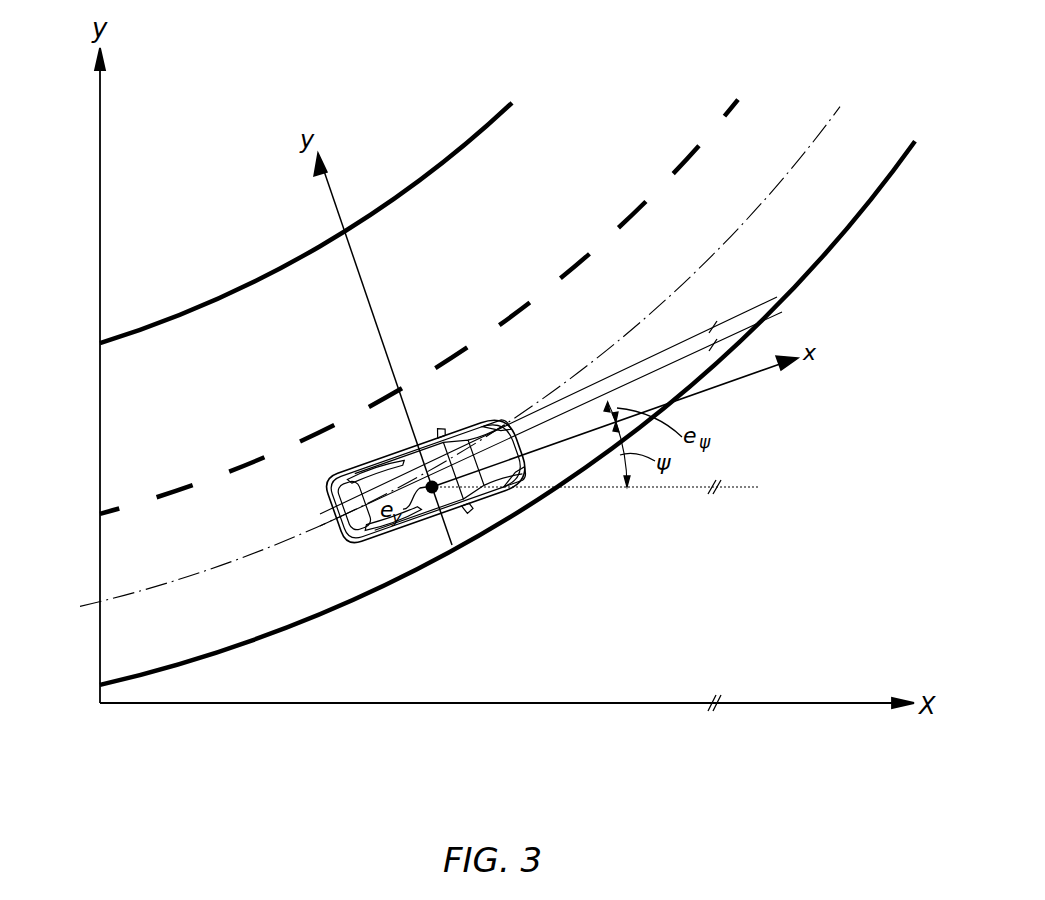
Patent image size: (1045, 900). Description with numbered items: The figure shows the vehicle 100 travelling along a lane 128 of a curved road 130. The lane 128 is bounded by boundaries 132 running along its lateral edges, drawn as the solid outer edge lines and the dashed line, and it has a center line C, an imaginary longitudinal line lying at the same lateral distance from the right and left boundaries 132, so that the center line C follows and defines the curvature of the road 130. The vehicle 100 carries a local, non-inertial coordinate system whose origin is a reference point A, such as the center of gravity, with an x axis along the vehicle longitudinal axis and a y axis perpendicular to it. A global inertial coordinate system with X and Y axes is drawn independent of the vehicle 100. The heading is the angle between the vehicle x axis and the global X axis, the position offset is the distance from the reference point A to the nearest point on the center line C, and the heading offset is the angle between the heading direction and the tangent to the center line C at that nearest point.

The vehicle 100 is at (420, 538).
The lane 128 is at (128, 453).
The road 130 is at (262, 300).
The boundaries 132 is at (311, 248).
The reference point A is at (468, 545).
The center line C is at (778, 183).